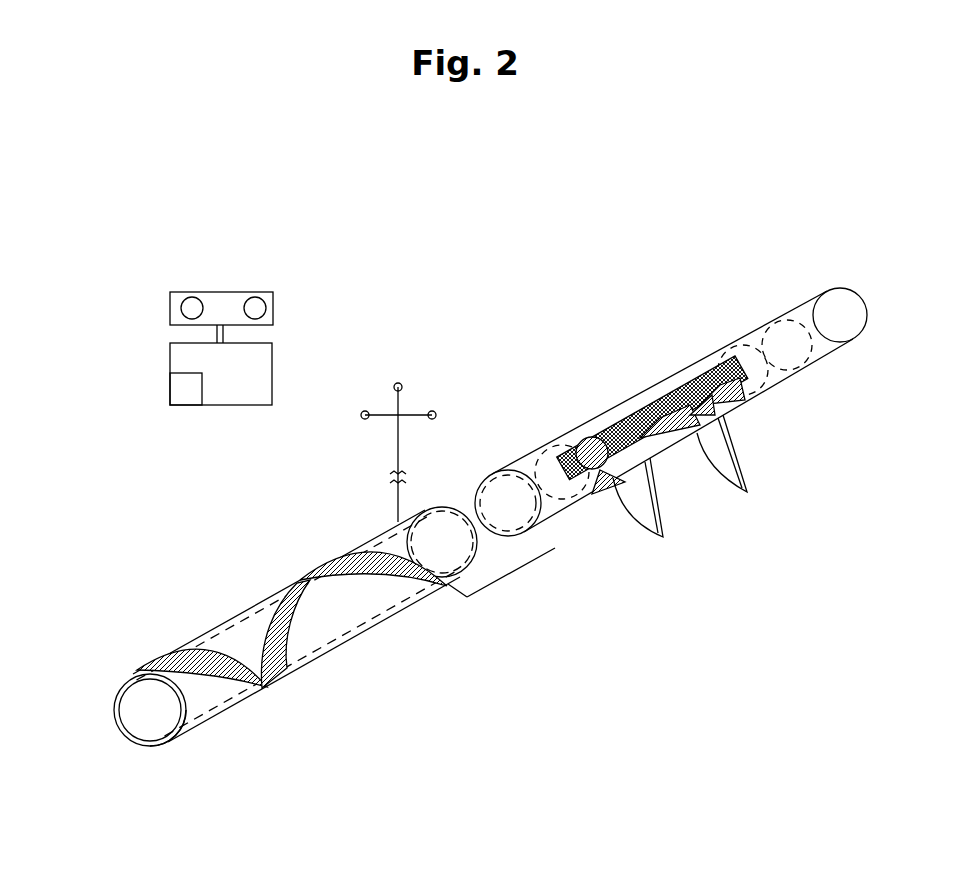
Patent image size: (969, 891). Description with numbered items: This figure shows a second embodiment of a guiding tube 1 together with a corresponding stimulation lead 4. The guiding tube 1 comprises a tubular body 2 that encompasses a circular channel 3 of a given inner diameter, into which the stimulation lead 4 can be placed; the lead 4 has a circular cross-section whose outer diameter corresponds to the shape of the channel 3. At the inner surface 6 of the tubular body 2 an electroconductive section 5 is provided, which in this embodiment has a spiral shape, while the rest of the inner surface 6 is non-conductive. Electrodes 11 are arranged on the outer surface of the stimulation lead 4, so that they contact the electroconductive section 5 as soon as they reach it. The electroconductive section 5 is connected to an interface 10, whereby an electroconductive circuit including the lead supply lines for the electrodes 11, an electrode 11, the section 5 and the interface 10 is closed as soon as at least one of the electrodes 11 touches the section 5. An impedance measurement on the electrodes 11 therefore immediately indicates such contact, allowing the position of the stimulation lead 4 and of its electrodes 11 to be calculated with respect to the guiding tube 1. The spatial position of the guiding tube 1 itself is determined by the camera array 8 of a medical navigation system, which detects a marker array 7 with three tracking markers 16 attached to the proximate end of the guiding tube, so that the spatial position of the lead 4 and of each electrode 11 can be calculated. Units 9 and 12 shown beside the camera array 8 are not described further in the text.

The guiding tube 1 is at (327, 668).
The tubular body 2 is at (368, 598).
The channel 3 is at (152, 700).
The stimulation lead 4 is at (802, 313).
The electroconductive section 5 is at (220, 652).
The inner surface 6 is at (176, 724).
The marker array 7 is at (428, 392).
The camera array 8 is at (237, 292).
The evaluation unit 9 is at (243, 405).
The interface 10 is at (530, 567).
The electrodes 11 is at (697, 483).
The memory 12 is at (176, 388).
The tracking markers 16 is at (365, 410).